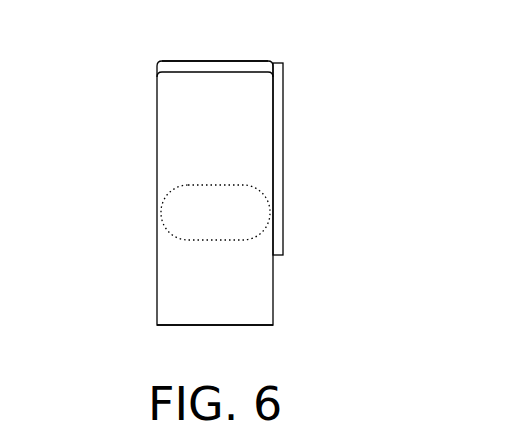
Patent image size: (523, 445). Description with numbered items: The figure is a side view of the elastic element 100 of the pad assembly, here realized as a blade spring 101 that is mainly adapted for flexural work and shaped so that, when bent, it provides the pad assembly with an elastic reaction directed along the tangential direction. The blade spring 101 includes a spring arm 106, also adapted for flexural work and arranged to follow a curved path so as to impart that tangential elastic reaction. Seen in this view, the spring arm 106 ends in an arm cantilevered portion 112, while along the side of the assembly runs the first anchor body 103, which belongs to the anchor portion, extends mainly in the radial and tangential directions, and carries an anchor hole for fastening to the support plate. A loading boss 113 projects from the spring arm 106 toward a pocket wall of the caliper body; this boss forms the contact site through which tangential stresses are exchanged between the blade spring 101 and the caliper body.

The elastic element 100 is at (201, 164).
The blade spring 101 is at (273, 164).
The first anchor body 103 is at (283, 143).
The spring arm 106 is at (248, 299).
The arm cantilevered portion 112 is at (223, 61).
The loading boss 113 is at (241, 219).